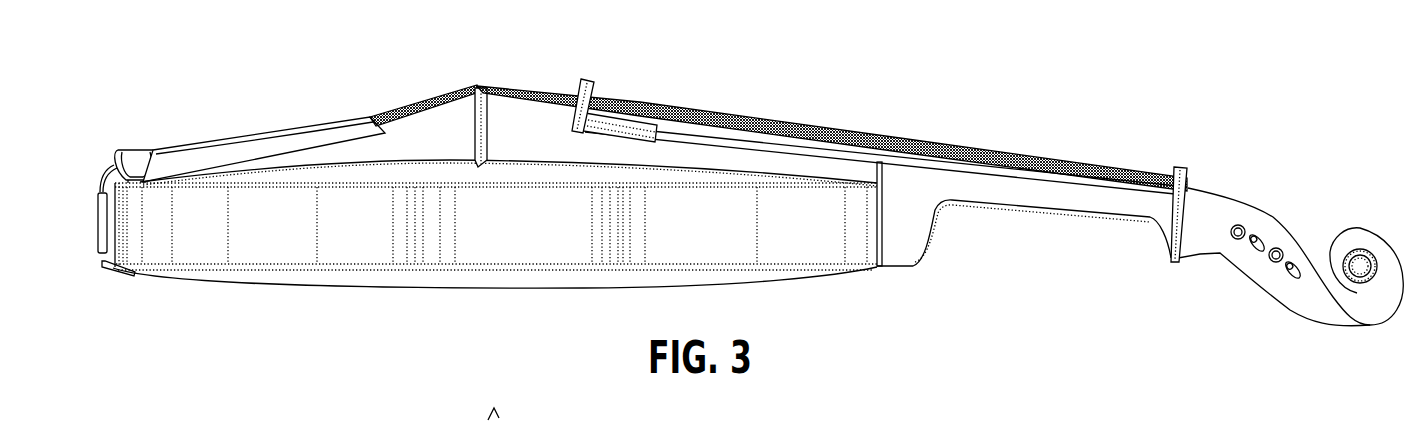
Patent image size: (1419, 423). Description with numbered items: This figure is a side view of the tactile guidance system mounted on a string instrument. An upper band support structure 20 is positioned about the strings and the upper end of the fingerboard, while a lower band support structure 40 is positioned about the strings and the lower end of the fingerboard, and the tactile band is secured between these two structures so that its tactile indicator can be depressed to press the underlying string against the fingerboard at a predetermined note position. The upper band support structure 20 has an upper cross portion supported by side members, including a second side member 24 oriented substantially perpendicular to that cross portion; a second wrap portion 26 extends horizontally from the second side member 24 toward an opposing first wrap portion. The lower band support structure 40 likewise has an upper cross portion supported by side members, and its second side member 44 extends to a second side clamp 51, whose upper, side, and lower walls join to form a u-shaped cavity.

The upper band support structure 20 is at (1198, 164).
The second side member 24 is at (1172, 230).
The second wrap portion 26 is at (1170, 256).
The lower band support structure 40 is at (583, 75).
The second side member 44 is at (575, 130).
The second side clamp 51 is at (620, 128).